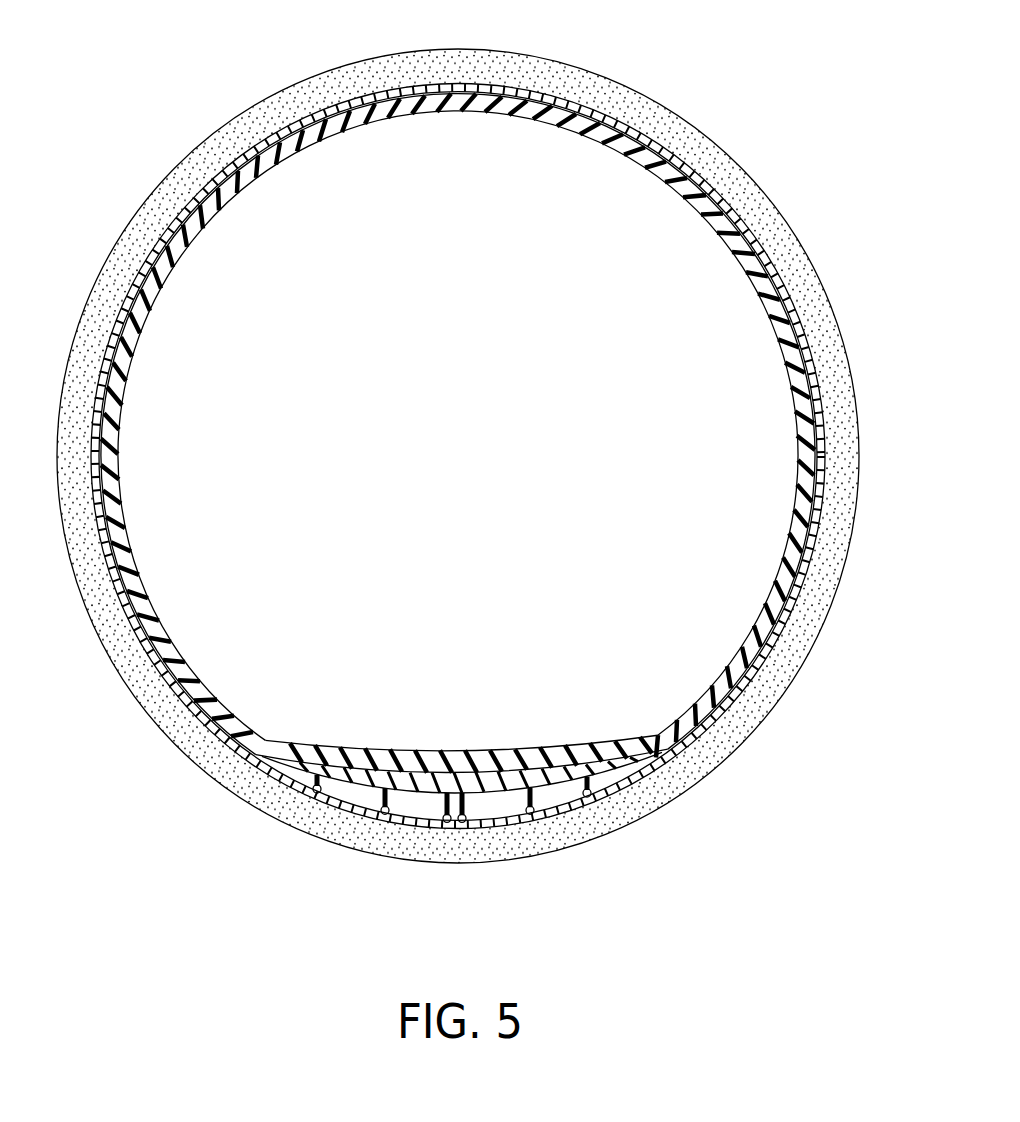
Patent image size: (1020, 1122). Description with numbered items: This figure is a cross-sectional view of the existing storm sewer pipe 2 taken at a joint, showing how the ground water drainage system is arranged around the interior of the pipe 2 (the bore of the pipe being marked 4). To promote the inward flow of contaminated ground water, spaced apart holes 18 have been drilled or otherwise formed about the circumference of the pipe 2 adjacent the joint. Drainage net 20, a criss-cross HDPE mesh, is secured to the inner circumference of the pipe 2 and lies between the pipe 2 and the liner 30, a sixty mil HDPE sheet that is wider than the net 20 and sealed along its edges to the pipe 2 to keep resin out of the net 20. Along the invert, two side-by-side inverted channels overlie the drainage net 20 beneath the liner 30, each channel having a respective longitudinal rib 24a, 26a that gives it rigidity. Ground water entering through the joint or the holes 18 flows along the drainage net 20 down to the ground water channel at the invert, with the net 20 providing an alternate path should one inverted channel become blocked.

The existing storm sewer pipe 2 is at (838, 504).
The tunnel 4 is at (452, 458).
The spaced apart holes 18 is at (447, 63).
The drainage net 20 is at (108, 352).
The liner 30 is at (290, 756).
The longitudinal rib 24a is at (386, 805).
The longitudinal rib 26a is at (522, 805).